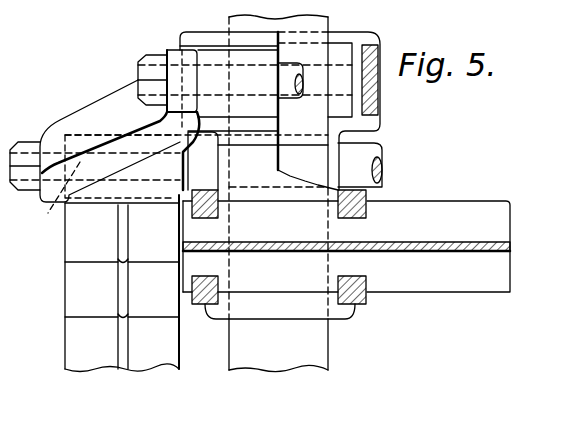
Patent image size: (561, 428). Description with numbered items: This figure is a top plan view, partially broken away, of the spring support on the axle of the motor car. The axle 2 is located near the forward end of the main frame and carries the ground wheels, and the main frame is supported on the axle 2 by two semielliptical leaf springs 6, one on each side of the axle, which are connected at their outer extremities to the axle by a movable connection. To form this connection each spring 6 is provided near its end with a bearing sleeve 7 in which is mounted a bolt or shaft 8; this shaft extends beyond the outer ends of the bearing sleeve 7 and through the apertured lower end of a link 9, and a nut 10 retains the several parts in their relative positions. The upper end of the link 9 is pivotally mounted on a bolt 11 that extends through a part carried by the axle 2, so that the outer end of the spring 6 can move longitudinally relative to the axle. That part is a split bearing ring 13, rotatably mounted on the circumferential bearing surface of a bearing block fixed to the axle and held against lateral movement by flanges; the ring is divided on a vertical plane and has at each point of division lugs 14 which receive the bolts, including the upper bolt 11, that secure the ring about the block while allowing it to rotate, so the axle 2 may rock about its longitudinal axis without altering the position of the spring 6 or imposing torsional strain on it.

The axle 2 is at (302, 359).
The semielliptical leaf spring 6 is at (77, 301).
The bearing sleeve 7 is at (97, 187).
The bolt or shaft 8 is at (358, 157).
The link 9 is at (77, 120).
The nut 10 is at (27, 147).
The bolt 11 is at (302, 72).
The split bearing ring 13 is at (378, 107).
The lug 14 is at (210, 78).